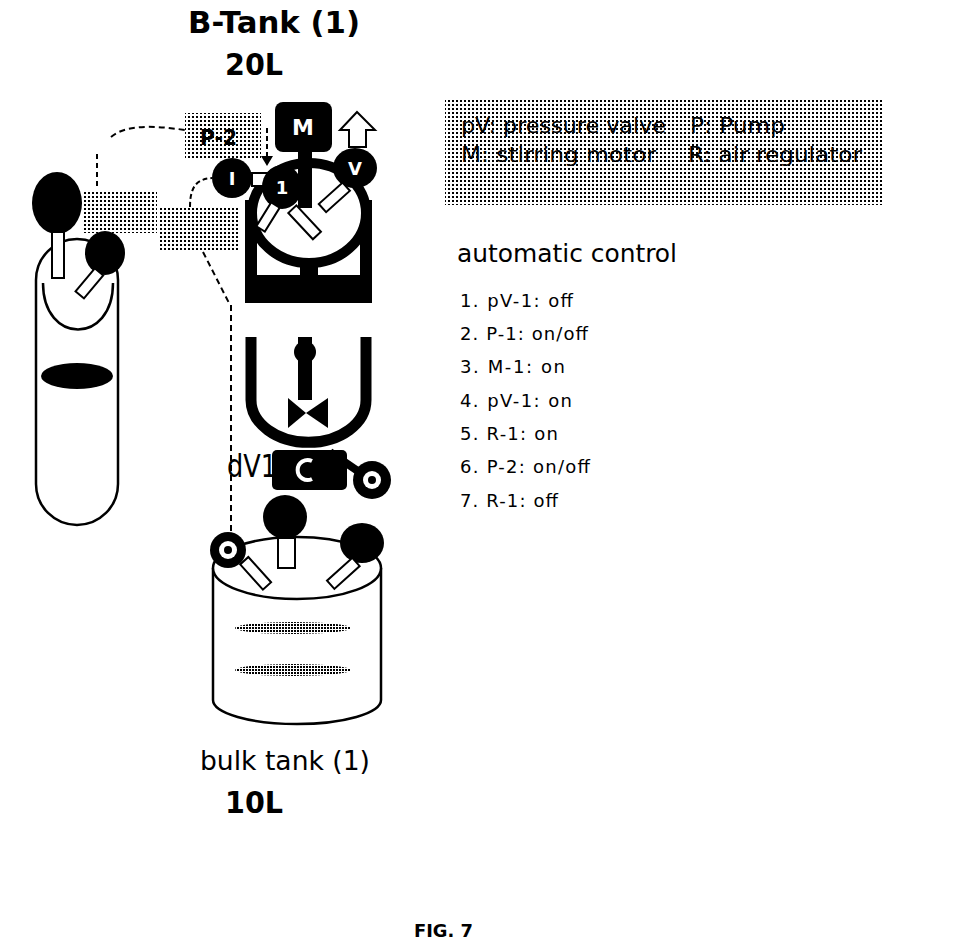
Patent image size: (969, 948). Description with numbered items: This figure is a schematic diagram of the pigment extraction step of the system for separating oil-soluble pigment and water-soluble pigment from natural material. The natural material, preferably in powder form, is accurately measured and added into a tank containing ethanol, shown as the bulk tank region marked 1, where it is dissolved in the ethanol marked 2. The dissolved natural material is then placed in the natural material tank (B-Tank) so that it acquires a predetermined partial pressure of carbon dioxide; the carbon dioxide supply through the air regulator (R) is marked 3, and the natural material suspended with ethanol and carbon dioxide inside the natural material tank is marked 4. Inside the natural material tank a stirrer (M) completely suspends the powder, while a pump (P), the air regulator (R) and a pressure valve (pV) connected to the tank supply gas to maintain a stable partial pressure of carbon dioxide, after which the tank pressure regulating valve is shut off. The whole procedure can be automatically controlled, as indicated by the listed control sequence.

The natural material in bulk tank 1 is at (317, 609).
The ethanol (EtOH) supply line via pump P-1 2 is at (292, 461).
The CO2 supply via air regulator R-1 3 is at (108, 324).
The natural material with EtOH and CO2 in B-tank 4 is at (337, 375).